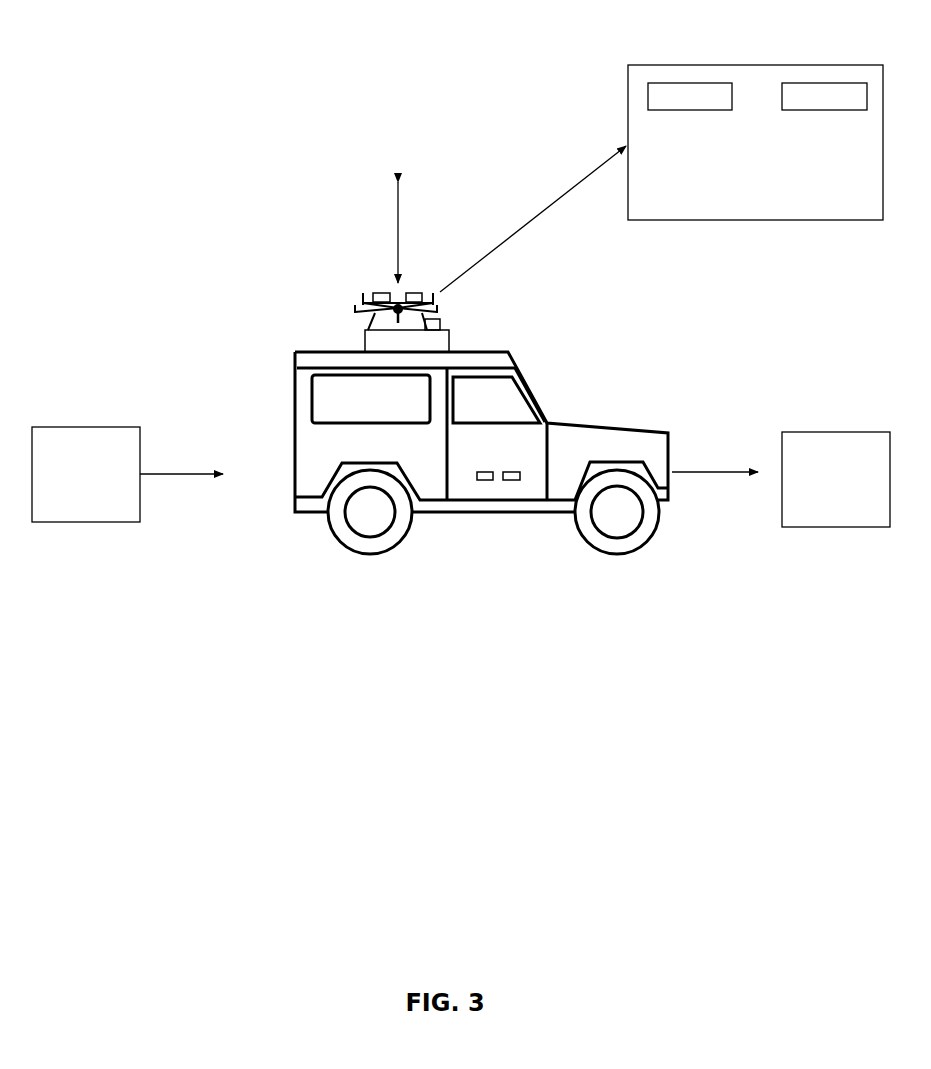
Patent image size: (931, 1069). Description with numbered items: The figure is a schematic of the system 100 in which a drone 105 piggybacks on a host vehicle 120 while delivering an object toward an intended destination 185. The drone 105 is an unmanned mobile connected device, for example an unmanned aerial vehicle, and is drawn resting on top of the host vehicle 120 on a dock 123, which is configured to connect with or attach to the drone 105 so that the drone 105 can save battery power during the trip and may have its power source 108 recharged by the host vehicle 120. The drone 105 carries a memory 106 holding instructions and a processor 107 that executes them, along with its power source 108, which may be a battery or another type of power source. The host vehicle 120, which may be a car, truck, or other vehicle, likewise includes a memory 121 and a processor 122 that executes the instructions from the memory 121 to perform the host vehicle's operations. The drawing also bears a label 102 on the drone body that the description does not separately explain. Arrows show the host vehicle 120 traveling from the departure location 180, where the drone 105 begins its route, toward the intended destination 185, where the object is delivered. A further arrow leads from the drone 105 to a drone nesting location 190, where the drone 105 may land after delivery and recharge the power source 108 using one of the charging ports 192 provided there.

The system 100 is at (263, 85).
The drone 102 is at (358, 306).
The drone 105 is at (437, 303).
The memory 106 is at (383, 292).
The processor 107 is at (422, 292).
The power source 108 is at (440, 322).
The host vehicle 120 is at (294, 452).
The memory 121 is at (485, 480).
The processor 122 is at (512, 480).
The dock 123 is at (365, 342).
The departure location 180 is at (87, 427).
The intended destination 185 is at (837, 432).
The drone nesting location 190 is at (628, 103).
The charging port 192 is at (695, 83).